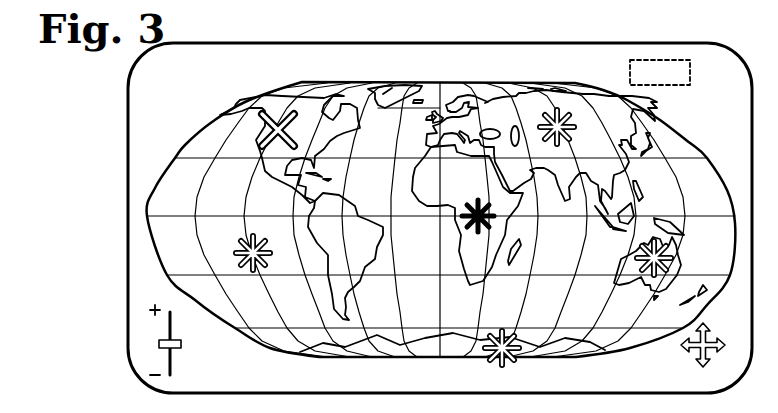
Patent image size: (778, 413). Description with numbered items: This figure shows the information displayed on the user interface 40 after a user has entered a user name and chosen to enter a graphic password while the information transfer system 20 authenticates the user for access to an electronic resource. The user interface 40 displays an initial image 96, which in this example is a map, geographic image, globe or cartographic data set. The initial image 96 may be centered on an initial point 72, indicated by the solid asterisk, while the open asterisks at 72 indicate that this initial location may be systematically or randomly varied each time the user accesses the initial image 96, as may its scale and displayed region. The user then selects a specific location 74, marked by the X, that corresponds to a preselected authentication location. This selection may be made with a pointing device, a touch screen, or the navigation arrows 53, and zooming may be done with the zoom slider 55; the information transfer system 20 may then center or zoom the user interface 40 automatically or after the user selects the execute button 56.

The information transfer system 20 is at (444, 34).
The user interface 40 is at (479, 34).
The initial image 96 is at (552, 60).
The initial point 72 is at (236, 252).
The specific location 74 is at (292, 130).
The execute button 56 is at (660, 86).
The zoom slider 55 is at (182, 345).
The navigation arrows 53 is at (690, 353).